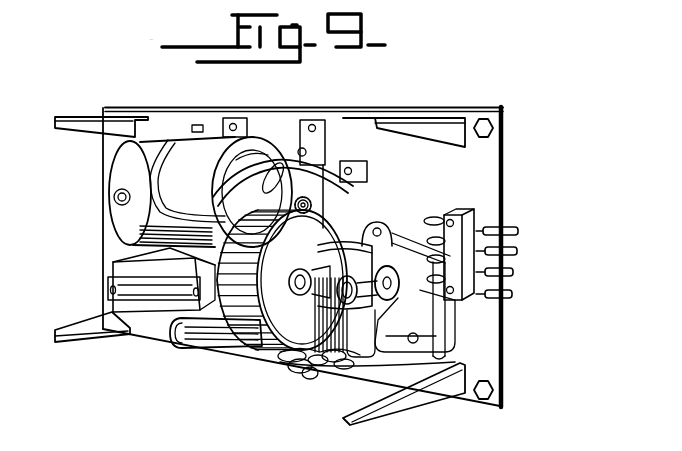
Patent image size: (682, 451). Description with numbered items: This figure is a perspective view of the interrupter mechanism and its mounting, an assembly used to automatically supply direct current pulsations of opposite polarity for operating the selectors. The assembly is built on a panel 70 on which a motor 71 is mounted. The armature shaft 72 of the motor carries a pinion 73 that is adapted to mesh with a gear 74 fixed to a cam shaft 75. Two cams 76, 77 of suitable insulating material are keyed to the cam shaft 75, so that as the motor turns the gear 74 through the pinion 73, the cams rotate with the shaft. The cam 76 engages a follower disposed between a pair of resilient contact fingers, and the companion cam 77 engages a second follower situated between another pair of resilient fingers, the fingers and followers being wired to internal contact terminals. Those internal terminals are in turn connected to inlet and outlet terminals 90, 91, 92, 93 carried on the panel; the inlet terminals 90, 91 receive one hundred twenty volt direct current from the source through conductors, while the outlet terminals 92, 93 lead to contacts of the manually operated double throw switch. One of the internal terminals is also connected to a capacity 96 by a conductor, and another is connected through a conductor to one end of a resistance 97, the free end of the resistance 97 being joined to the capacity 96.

The panel 70 is at (493, 191).
The motor 71 is at (175, 178).
The armature shaft 72 is at (313, 204).
The pinion 73 is at (321, 218).
The gear 74 is at (292, 322).
The cam shaft 75 is at (392, 285).
The cam 76 is at (357, 252).
The companion cam 77 is at (330, 242).
The inlet terminal 90 is at (518, 232).
The inlet terminal 91 is at (518, 252).
The outlet terminal 92 is at (514, 274).
The outlet terminal 93 is at (513, 296).
The capacity 96 is at (115, 265).
The resistance 97 is at (198, 338).